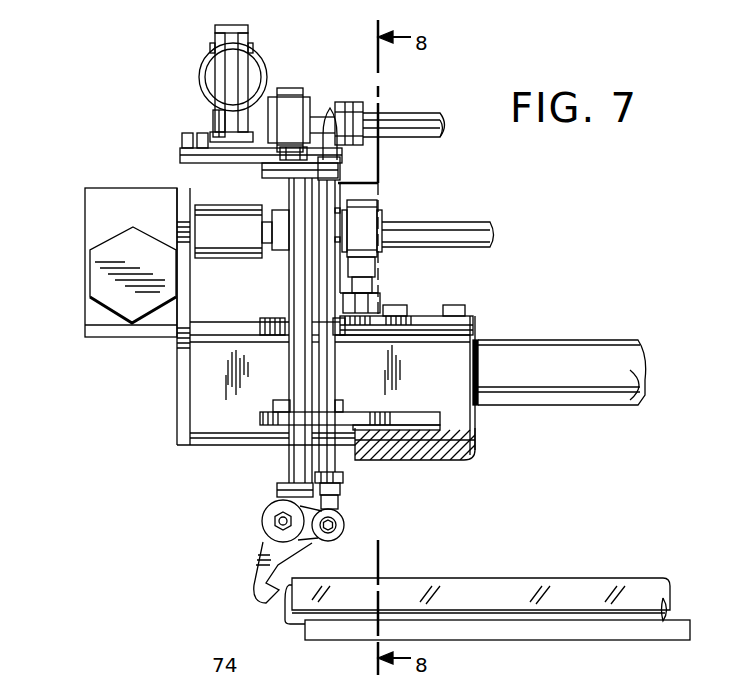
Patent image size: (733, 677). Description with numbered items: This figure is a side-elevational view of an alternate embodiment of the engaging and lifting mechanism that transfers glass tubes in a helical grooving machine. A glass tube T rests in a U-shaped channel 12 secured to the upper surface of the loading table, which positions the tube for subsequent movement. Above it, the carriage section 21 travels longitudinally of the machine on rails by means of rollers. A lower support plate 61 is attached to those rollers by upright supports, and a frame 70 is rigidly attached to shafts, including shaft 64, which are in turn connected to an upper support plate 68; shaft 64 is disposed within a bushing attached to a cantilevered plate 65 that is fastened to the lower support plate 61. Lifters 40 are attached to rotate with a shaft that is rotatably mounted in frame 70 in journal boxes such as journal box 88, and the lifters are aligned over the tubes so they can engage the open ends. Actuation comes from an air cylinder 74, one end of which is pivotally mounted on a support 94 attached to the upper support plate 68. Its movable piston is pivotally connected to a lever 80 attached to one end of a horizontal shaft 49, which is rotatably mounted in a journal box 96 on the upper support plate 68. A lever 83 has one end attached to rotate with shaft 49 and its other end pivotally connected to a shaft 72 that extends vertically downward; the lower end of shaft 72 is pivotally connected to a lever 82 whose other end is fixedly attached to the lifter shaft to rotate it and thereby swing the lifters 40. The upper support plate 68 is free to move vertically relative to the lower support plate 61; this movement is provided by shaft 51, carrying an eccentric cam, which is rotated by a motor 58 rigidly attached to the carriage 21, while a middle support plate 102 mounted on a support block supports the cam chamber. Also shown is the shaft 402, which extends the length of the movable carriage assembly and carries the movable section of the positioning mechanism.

The lever 80 is at (233, 36).
The air cylinder 74 is at (200, 78).
The support 94 is at (214, 120).
The journal box 96 is at (303, 90).
The lever 83 is at (350, 102).
The horizontal shaft 49 is at (410, 130).
The upper support plate 68 is at (262, 173).
The shaft 51 is at (470, 223).
The motor 58 is at (95, 228).
The carriage section 21 is at (170, 404).
The shaft 64 is at (298, 284).
The middle support plate 102 is at (472, 316).
The shaft 72 is at (334, 363).
The cantilevered plate 65 is at (408, 412).
The lower support plate 61 is at (440, 450).
The shaft 402 is at (583, 393).
The frame 70 is at (283, 482).
The journal box 88 is at (270, 516).
The lever 82 is at (304, 535).
The lifter 40 is at (262, 568).
The glass tube T is at (540, 583).
The U-shaped channel 12 is at (522, 627).